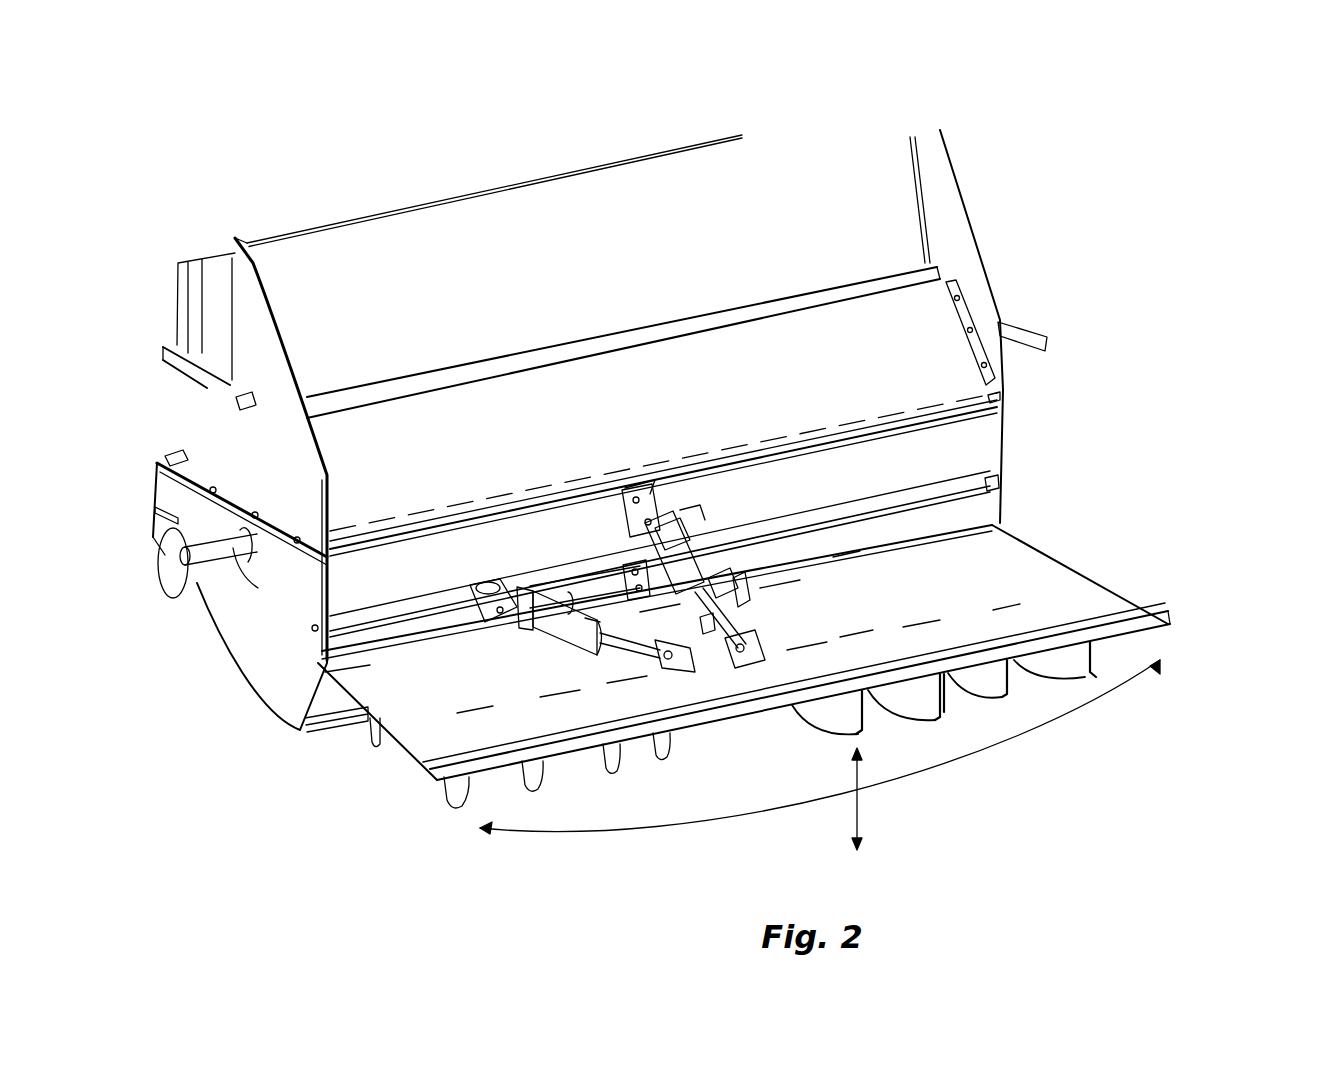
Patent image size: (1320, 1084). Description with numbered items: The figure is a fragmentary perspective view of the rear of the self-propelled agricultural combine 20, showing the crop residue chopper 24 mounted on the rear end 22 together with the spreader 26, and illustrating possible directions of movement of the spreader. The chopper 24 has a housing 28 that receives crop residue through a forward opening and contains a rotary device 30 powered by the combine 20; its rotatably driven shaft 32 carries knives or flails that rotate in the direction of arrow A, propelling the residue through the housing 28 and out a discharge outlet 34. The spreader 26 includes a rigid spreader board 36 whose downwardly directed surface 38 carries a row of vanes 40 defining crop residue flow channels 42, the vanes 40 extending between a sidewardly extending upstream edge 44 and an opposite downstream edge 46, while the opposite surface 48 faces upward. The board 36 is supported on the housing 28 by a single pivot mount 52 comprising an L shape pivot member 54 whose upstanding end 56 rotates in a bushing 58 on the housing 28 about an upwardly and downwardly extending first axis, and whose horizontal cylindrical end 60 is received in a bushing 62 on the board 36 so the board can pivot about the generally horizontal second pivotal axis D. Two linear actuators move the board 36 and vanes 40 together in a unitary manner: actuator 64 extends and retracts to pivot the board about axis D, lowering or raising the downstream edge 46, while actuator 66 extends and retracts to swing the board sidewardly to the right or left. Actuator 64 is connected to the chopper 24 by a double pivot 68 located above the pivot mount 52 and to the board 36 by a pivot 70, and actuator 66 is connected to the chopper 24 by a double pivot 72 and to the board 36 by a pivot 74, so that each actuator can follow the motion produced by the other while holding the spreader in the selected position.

The self-propelled agricultural combine 20 is at (707, 114).
The rear end 22 is at (210, 253).
The crop residue chopper 24 is at (1012, 442).
The spreader 26 is at (1160, 600).
The housing 28 is at (265, 710).
The rotary device 30 is at (208, 333).
The rotatably driven shaft 32 is at (238, 540).
The discharge outlet 34 is at (330, 697).
The spreader board 36 is at (1180, 625).
The surface 38 is at (420, 764).
The vanes 40 is at (450, 812).
The crop residue flow channels 42 is at (433, 800).
The upstream edge 44 is at (330, 678).
The downstream edge 46 is at (1150, 672).
The opposite surface 48 is at (1065, 585).
The single pivot mount 52 is at (630, 556).
The L shape pivot member 54 is at (742, 582).
The upstanding end 56 is at (620, 530).
The bushing 58 is at (608, 572).
The horizontal cylindrical end 60 is at (748, 595).
The bushing 62 is at (700, 553).
The actuator 64 is at (713, 493).
The actuator 66 is at (553, 650).
The double pivot 68 is at (657, 488).
The pivot 70 is at (748, 657).
The double pivot 72 is at (487, 615).
The pivot 74 is at (635, 668).
The arrow A is at (195, 585).
The second pivotal axis D is at (770, 582).